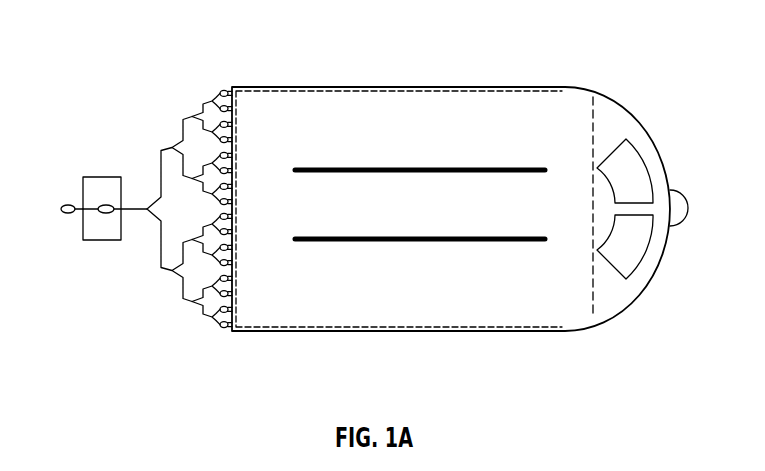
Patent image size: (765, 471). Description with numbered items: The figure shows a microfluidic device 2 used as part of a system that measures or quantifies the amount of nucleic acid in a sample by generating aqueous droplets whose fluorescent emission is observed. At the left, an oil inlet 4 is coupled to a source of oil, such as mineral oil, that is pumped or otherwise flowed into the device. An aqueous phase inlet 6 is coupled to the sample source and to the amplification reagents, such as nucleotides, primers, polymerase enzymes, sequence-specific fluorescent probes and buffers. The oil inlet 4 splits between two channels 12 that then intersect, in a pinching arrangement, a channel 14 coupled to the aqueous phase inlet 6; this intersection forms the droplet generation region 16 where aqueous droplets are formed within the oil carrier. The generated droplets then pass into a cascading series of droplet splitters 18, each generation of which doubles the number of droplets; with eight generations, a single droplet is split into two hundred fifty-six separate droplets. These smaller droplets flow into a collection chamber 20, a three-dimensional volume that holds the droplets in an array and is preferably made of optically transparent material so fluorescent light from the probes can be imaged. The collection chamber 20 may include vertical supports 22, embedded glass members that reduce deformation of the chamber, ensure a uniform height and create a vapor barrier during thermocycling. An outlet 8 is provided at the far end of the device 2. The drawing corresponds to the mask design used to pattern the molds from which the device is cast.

The microfluidic device 2 is at (590, 47).
The oil inlet 4 is at (69, 205).
The aqueous phase inlet 6 is at (104, 213).
The outlet 8 is at (672, 190).
The channels 12 is at (103, 177).
The channel 14 is at (125, 212).
The droplet generation region 16 is at (147, 184).
The droplet splitters 18 is at (205, 101).
The collection chamber 20 is at (518, 332).
The vertical supports 22 is at (424, 167).